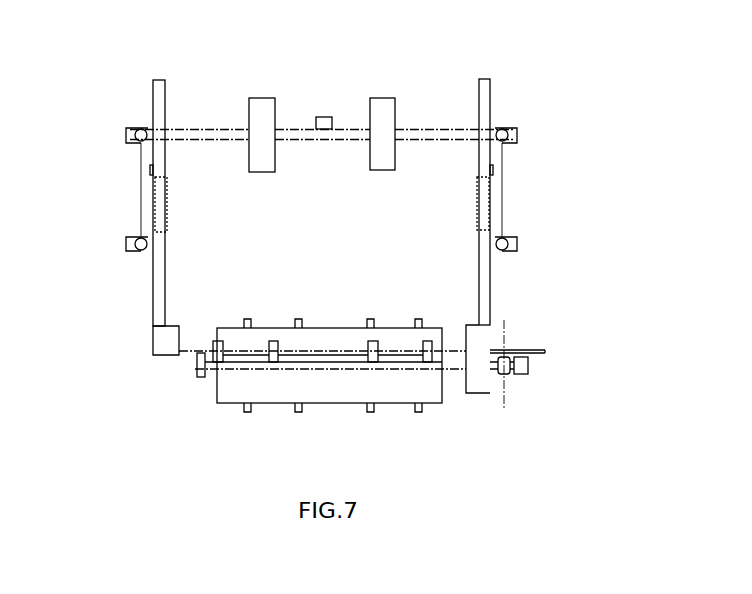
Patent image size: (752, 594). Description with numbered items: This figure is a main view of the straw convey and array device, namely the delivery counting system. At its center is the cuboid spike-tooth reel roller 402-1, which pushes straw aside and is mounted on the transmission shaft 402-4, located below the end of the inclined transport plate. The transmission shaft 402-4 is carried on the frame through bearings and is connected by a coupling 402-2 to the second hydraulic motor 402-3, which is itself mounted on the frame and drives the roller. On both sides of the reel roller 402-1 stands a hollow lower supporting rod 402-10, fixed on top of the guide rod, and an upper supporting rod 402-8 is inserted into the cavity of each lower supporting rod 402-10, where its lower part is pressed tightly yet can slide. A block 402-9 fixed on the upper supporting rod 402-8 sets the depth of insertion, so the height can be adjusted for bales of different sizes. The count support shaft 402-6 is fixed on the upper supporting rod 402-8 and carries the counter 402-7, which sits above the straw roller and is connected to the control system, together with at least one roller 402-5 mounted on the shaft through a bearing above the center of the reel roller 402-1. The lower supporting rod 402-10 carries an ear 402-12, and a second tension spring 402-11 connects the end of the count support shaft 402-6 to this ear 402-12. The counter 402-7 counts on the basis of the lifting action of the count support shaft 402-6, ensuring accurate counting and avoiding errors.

The cuboid reel roller 402-1 is at (224, 390).
The coupling 402-2 is at (503, 375).
The second hydraulic motor 402-3 is at (527, 374).
The transmission shaft 402-4 is at (455, 368).
The roller 402-5 is at (383, 97).
The count support shaft 402-6 is at (400, 128).
The counter 402-7 is at (324, 117).
The upper supporting rod 402-8 is at (158, 80).
The block 402-9 is at (150, 172).
The lower supporting rod 402-10 is at (153, 290).
The second tension spring 402-11 is at (142, 237).
The ear 402-12 is at (127, 243).